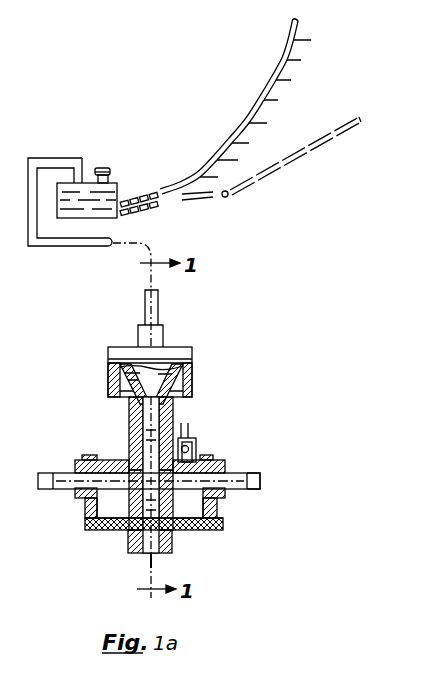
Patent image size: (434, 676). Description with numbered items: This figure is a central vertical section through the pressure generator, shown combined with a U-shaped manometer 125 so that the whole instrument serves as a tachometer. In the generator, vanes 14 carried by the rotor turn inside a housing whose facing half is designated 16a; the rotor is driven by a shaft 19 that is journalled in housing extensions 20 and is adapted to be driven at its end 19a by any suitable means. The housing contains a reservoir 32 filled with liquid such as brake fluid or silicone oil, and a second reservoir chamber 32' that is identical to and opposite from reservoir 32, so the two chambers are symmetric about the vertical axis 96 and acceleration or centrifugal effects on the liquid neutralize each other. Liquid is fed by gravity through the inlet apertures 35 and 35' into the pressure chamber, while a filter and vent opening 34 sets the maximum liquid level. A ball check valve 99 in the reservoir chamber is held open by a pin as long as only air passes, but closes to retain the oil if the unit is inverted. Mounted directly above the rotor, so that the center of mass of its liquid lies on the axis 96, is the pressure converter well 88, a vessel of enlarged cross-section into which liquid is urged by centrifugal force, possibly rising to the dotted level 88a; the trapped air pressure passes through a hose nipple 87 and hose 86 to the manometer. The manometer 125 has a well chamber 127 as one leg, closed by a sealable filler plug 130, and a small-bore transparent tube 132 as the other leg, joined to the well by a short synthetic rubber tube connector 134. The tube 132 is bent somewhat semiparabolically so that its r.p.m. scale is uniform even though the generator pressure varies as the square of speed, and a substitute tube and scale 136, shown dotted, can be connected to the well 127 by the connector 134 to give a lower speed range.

The manometer 125 is at (191, 115).
The small-bore transparent tube 132 is at (273, 68).
The tube and scale 136 is at (307, 162).
The hose 86 is at (77, 245).
The well chamber 127 is at (80, 208).
The sealable filler plug 130 is at (104, 168).
The tube connector 134 is at (158, 210).
The hose nipple 87 is at (145, 310).
The pressure converter 88 is at (108, 376).
The liquid level 88a is at (184, 378).
The vanes 14 is at (130, 432).
The housing extensions 20 is at (80, 458).
The inlet aperture 35 is at (161, 535).
The inlet aperture 35' is at (139, 534).
The reservoir 32 is at (223, 510).
The second reservoir chamber 32' is at (66, 510).
The shaft 19 is at (58, 479).
The shaft drive end 19a is at (262, 484).
The filter and vent opening 34 is at (192, 432).
The housing half 16a is at (178, 425).
The ball valve 99 is at (195, 450).
The vertical axis 96 is at (153, 568).